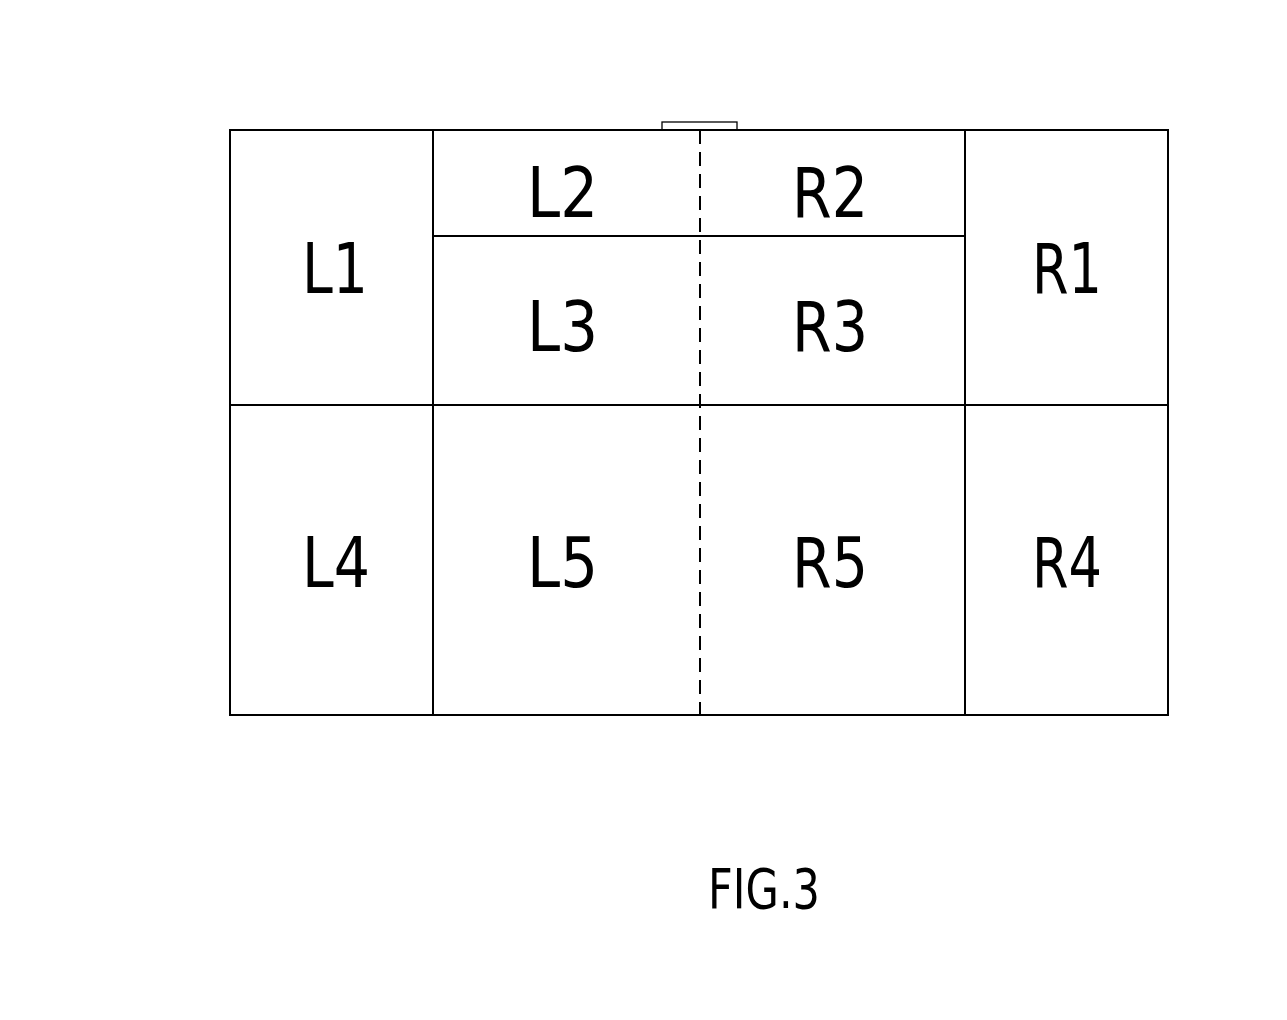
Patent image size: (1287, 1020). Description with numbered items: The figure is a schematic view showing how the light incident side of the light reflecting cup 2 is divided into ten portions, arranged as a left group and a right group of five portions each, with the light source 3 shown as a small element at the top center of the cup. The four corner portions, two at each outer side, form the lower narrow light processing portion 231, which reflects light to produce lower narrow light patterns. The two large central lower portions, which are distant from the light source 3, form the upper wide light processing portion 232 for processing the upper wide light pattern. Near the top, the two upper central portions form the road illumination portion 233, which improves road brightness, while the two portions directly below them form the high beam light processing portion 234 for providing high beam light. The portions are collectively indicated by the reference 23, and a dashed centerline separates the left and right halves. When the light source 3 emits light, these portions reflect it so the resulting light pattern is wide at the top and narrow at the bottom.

The light reflecting cup 2 is at (1182, 200).
The light source 3 is at (702, 119).
The display area 23 is at (1012, 165).
The lower narrow light processing portion 231 is at (255, 342).
The upper wide light processing portion 232 is at (665, 662).
The road illumination portion 233 is at (745, 183).
The high beam light processing portion 234 is at (677, 280).